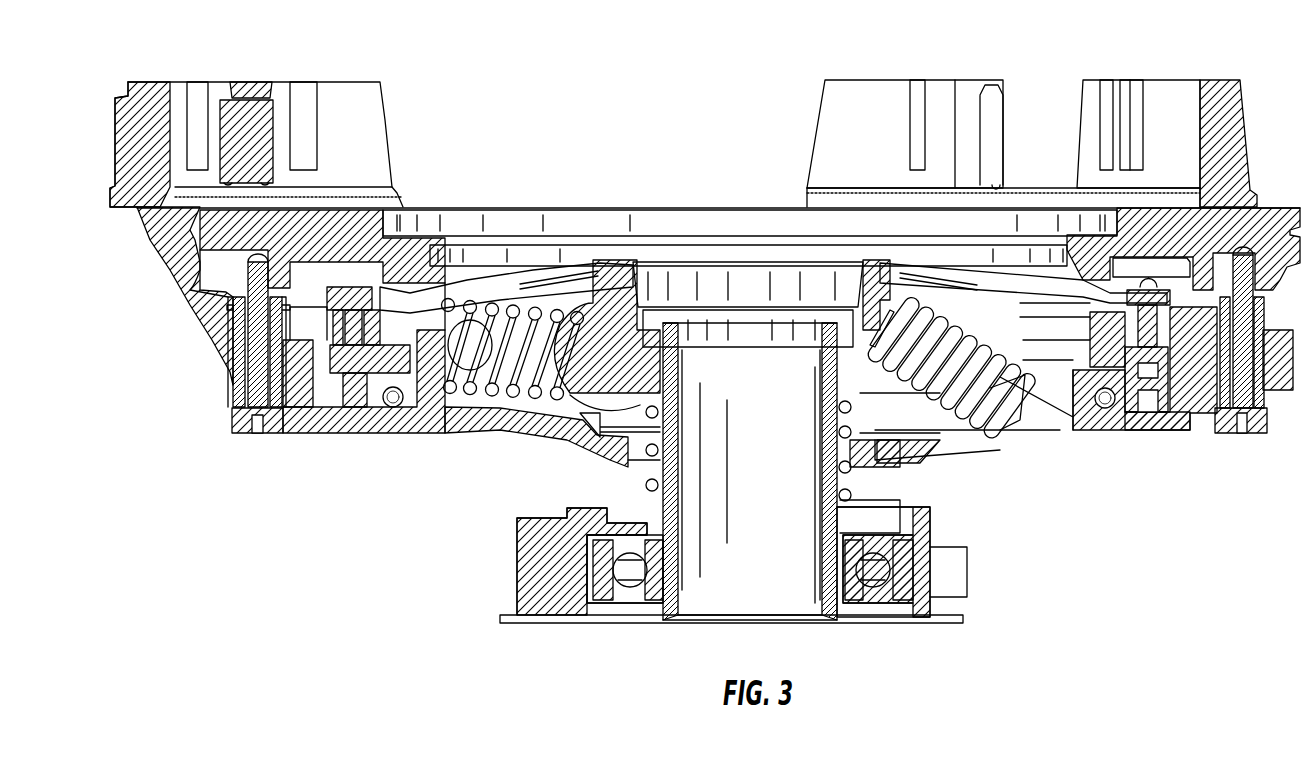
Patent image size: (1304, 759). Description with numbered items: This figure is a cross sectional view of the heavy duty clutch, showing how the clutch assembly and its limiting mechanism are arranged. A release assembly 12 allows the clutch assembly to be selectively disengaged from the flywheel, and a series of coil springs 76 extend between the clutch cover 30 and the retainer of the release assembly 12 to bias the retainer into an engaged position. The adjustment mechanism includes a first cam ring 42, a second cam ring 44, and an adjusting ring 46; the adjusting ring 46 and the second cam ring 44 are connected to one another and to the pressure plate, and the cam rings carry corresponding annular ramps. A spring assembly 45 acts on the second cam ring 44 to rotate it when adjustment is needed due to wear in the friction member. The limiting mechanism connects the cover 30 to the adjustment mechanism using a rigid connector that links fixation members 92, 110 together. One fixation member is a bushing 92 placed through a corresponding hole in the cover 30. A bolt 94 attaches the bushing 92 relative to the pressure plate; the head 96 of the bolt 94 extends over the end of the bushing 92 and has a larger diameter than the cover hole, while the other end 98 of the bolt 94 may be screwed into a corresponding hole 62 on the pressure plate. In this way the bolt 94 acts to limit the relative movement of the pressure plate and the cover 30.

The release assembly 12 is at (963, 604).
The clutch cover 30 is at (200, 300).
The first cam ring 42 is at (370, 410).
The second cam ring 44 is at (323, 392).
The spring assembly 45 is at (393, 408).
The adjusting ring 46 is at (385, 318).
The hole 62 is at (252, 257).
The coil springs 76 is at (985, 395).
The bushing 92 is at (232, 355).
The bolt 94 is at (232, 420).
The head 96 is at (257, 435).
The other end 98 is at (246, 257).
The fixation member 110 is at (355, 290).